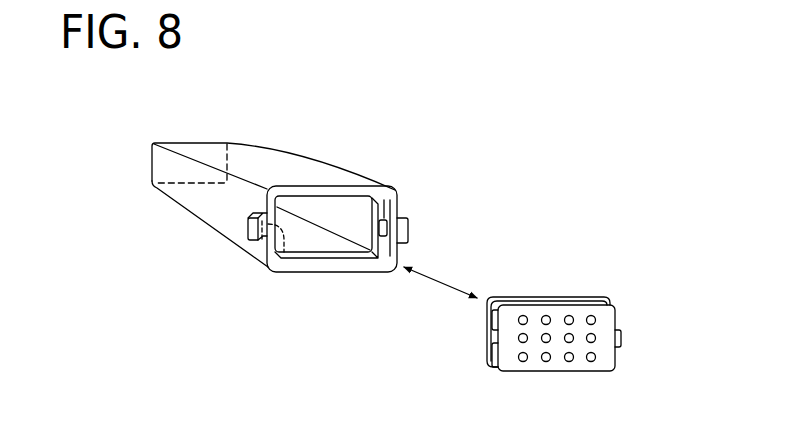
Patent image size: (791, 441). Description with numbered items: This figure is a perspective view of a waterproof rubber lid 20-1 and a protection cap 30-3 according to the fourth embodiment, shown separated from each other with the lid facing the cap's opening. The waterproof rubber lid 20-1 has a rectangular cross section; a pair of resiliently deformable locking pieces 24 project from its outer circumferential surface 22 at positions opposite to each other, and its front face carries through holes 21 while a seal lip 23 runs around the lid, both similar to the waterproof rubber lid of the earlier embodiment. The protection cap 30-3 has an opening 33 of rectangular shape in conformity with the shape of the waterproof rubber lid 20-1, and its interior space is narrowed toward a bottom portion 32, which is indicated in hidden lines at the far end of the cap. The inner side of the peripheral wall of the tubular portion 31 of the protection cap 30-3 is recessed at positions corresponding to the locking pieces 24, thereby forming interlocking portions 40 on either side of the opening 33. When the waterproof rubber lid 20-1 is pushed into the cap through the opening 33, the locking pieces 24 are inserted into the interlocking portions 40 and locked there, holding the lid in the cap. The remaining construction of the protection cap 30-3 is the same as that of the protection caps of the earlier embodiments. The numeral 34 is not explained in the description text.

The waterproof rubber lid 20-1 is at (478, 313).
The through holes 21 is at (591, 362).
The outer circumferential surface 22 is at (497, 322).
The seal lip 23 is at (582, 297).
The locking pieces 24 is at (486, 351).
The protection cap 30-3 is at (349, 160).
The tubular portion 31 is at (297, 154).
The bottom portion 32 is at (173, 171).
The opening 33 is at (384, 251).
The fitting opening 34 is at (307, 247).
The interlocking portions 40 is at (384, 219).